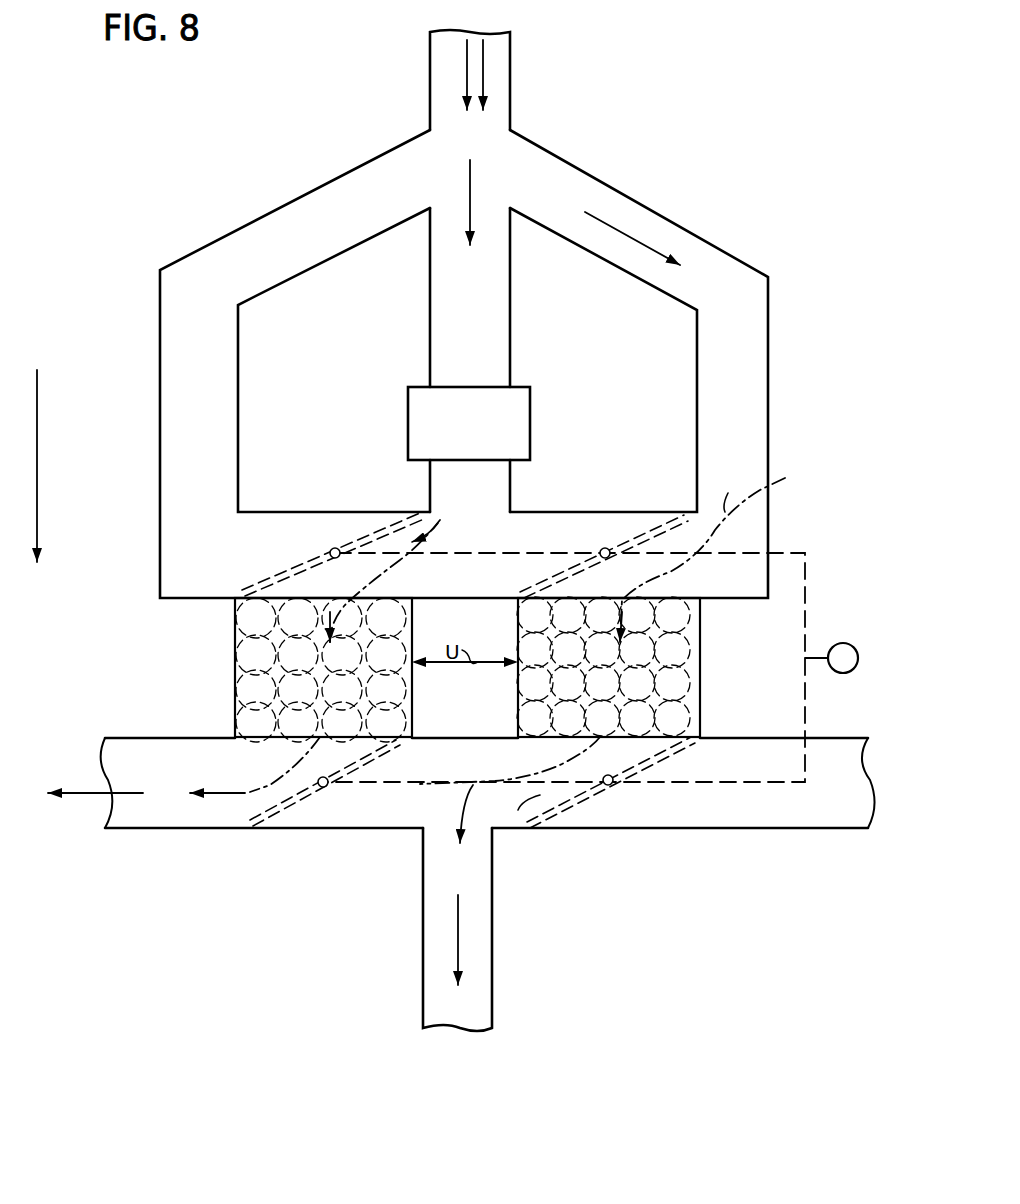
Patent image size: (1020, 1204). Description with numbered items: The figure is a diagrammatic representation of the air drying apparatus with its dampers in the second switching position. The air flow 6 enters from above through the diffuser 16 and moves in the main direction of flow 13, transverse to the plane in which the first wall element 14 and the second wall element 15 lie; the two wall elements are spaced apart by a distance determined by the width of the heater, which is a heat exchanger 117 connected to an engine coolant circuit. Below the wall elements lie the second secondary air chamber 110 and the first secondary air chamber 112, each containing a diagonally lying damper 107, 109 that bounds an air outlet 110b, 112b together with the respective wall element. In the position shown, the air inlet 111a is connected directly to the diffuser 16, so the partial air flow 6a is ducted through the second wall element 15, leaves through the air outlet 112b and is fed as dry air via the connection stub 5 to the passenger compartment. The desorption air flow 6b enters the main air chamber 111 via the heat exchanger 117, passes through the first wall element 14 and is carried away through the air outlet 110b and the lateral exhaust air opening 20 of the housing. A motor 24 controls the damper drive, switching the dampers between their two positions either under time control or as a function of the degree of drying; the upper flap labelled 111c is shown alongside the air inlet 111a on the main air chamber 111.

The connection stub 5 is at (478, 968).
The air flow 6 is at (483, 60).
The partial air flow 6a is at (625, 232).
The desorption air flow 6b is at (400, 535).
The main direction of flow 13 is at (40, 470).
The first wall element 14 is at (235, 652).
The second wall element 15 is at (703, 628).
The diffuser 16 is at (500, 165).
The exhaust air opening 20 is at (870, 780).
The motor 24 is at (840, 650).
The damper 107 is at (290, 822).
The damper 109 is at (590, 826).
The second secondary air chamber 110 is at (352, 803).
The air outlet 110b is at (262, 762).
The main air chamber 111 is at (463, 533).
The air inlet 111a is at (680, 578).
The upper left flap 111c is at (305, 542).
The first secondary air chamber 112 is at (645, 800).
The air outlet 112b is at (527, 828).
The heat exchanger 117 is at (522, 420).